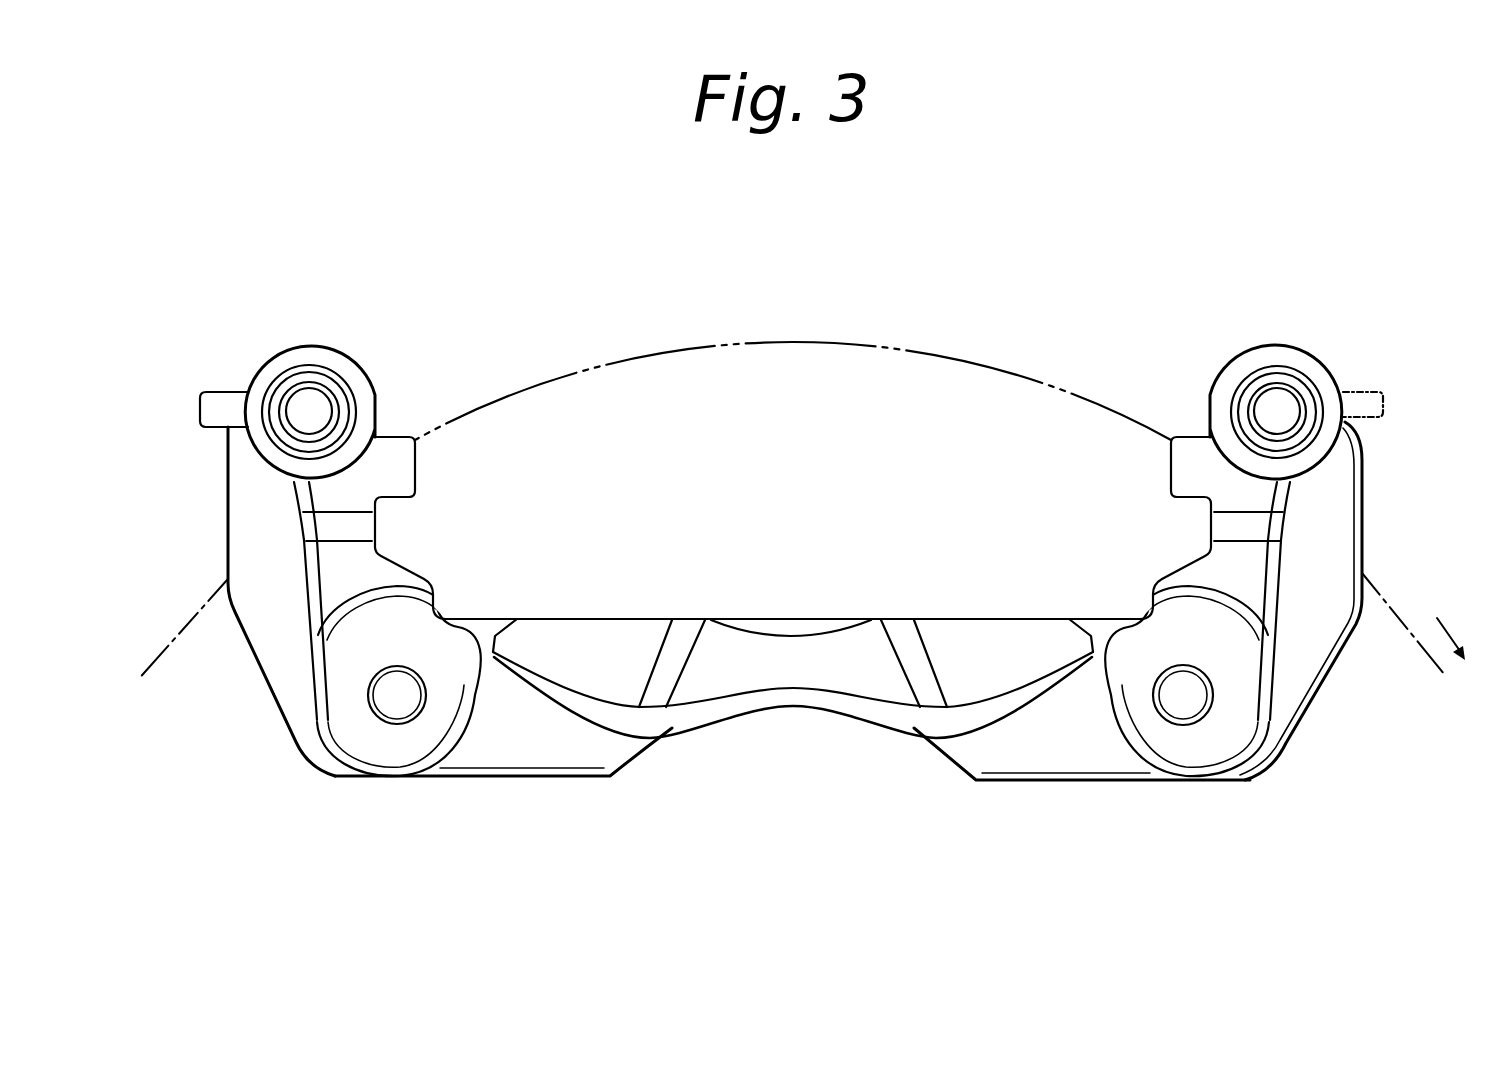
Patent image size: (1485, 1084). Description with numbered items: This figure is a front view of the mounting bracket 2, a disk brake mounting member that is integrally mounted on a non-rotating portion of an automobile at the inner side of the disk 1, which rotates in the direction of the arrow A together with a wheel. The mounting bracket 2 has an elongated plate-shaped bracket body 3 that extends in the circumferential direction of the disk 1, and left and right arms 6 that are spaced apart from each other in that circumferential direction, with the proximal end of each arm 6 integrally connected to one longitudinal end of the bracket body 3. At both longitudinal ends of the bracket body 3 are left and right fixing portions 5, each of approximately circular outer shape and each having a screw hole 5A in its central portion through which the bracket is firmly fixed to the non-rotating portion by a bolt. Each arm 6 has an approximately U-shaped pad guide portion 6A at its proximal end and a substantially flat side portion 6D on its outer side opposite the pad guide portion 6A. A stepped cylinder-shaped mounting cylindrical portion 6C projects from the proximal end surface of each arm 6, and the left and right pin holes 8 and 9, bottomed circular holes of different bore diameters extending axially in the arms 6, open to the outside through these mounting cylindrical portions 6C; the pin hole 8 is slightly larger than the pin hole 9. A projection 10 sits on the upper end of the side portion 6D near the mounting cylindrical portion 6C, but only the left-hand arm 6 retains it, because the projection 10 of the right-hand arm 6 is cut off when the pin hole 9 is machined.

The disk 1 is at (803, 341).
The mounting bracket 2 is at (1330, 351).
The bracket body 3 is at (808, 678).
The fixing portion 5 is at (793, 716).
The screw hole 5A is at (392, 704).
The arm 6 is at (806, 580).
The pad guide portion 6A is at (393, 500).
The mounting cylindrical portion 6C is at (355, 350).
The side portion 6D is at (228, 507).
The pin hole 8 is at (308, 392).
The pin hole 9 is at (1270, 392).
The projection 10 is at (220, 410).
The direction of disk rotation A is at (1456, 631).